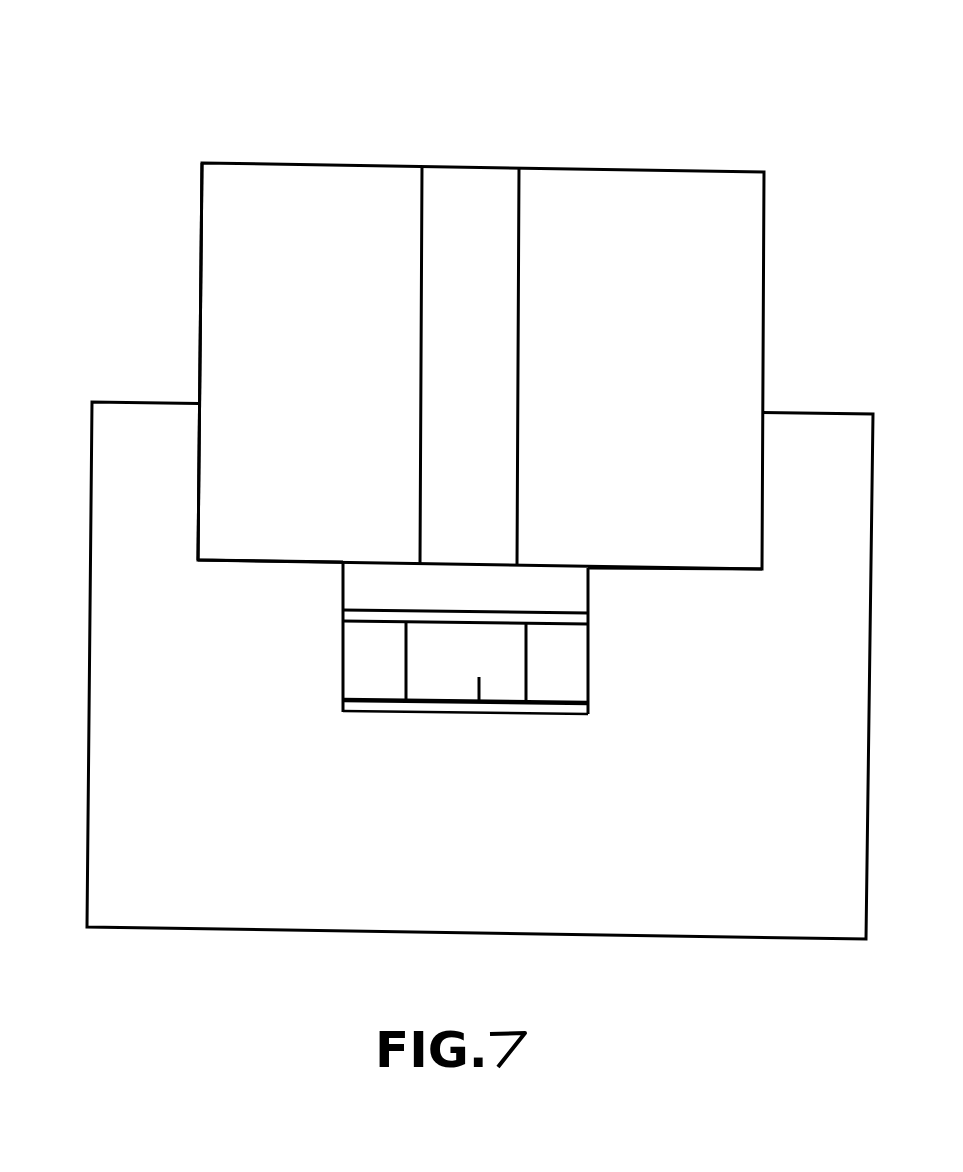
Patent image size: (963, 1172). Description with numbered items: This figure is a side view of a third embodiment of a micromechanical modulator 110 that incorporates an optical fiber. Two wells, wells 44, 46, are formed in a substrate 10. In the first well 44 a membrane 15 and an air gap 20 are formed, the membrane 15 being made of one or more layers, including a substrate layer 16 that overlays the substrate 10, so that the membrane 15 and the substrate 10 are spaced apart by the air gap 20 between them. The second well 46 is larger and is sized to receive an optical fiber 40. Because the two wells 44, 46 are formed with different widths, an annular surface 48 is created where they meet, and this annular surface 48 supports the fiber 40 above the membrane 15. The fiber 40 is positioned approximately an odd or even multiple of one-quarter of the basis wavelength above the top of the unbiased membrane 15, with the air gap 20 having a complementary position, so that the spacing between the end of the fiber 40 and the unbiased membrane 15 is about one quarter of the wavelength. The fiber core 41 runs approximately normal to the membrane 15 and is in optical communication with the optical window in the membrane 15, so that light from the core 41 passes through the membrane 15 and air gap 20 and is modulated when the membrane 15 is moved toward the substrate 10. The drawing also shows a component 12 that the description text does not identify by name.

The substrate 10 is at (118, 490).
The chip 12 is at (570, 687).
The membrane 15 is at (578, 620).
The substrate layer 16 is at (372, 705).
The air gap 20 is at (478, 700).
The optical fiber 40 is at (737, 220).
The fiber core 41 is at (472, 187).
The well 44 is at (343, 580).
The well 46 is at (198, 358).
The annular surface 48 is at (215, 562).
The micromechanical modulator 110 is at (138, 92).